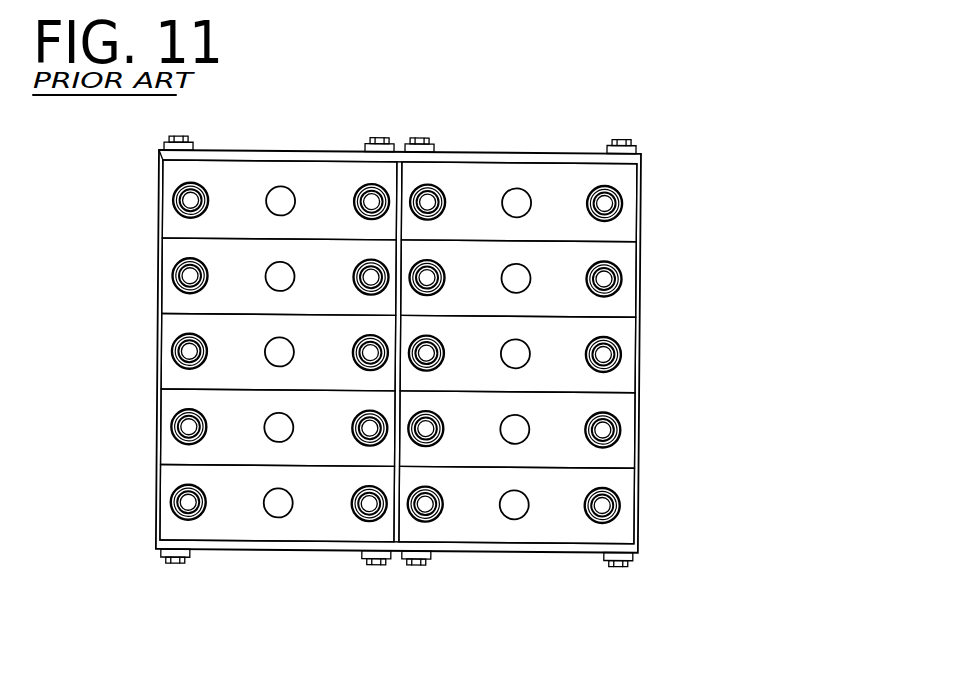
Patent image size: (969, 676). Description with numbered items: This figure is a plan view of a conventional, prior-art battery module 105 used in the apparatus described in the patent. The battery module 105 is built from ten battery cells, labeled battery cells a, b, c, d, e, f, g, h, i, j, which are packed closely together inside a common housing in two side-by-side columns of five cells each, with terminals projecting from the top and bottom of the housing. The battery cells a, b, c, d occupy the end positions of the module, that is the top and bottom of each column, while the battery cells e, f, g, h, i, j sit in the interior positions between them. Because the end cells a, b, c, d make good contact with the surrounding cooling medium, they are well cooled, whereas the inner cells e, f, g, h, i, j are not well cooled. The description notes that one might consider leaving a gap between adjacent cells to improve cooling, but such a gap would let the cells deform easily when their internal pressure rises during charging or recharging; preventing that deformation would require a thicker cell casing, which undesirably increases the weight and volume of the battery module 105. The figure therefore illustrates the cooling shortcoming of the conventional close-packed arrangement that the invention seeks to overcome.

The battery module 105 is at (641, 119).
The battery cell a is at (230, 185).
The battery cell b is at (320, 532).
The battery cell c is at (485, 187).
The battery cell d is at (553, 530).
The battery cell e is at (172, 260).
The battery cell f is at (172, 332).
The battery cell g is at (172, 412).
The battery cell h is at (630, 258).
The battery cell i is at (630, 342).
The battery cell j is at (630, 415).